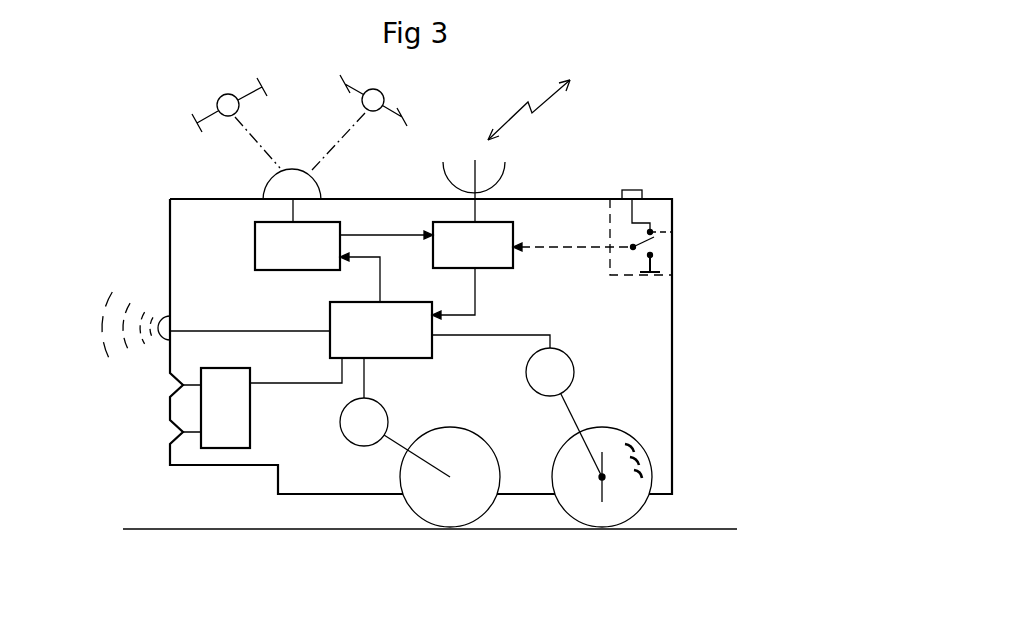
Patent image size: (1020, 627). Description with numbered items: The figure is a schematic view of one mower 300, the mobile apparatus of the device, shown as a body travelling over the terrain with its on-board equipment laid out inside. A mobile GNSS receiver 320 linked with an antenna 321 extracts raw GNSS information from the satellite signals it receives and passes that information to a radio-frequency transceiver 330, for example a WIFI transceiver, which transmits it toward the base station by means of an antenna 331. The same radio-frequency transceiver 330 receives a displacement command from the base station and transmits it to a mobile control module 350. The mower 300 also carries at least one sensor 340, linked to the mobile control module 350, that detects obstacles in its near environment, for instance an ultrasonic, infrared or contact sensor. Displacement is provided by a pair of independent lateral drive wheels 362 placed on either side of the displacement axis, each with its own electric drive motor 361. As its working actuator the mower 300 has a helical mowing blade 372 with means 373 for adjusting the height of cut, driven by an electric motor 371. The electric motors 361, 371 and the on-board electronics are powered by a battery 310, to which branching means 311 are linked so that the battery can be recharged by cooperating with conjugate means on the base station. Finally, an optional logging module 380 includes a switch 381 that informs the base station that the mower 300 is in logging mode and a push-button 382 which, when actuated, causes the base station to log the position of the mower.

The mower 300 is at (681, 306).
The battery 310 is at (222, 437).
The branching means 311 is at (170, 385).
The mobile GNSS receiver 320 is at (258, 243).
The antenna 321 is at (280, 185).
The radio-frequency transceiver 330 is at (513, 232).
The antenna 331 is at (470, 175).
The sensor 340 is at (164, 320).
The mobile control module 350 is at (402, 313).
The electric drive motor 361 is at (352, 442).
The lateral drive wheels 362 is at (435, 503).
The electric motor 371 is at (568, 371).
The helical mowing blade 372 is at (632, 508).
The means for adjusting the height of cut 373 is at (602, 452).
The logging module 380 is at (663, 207).
The switch 381 is at (655, 245).
The push-button 382 is at (630, 190).